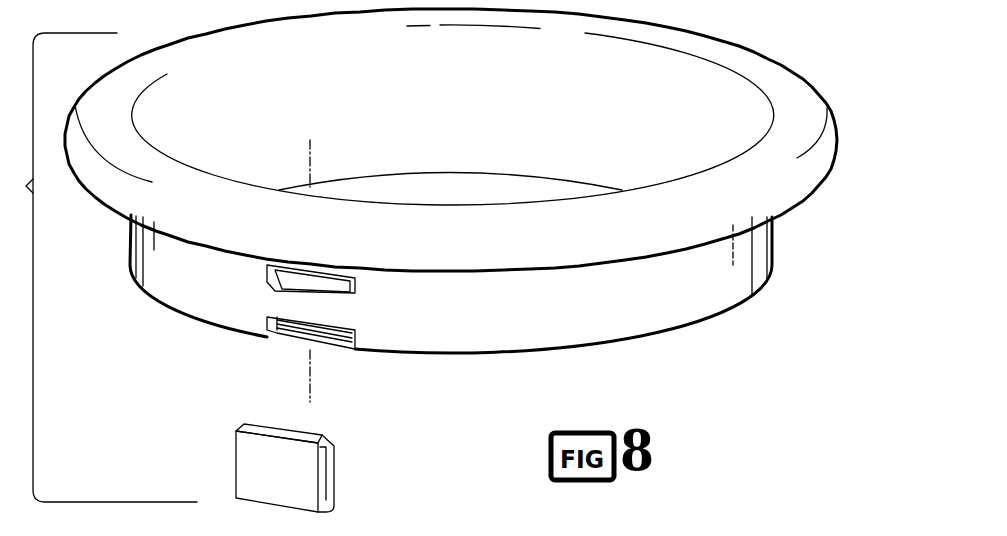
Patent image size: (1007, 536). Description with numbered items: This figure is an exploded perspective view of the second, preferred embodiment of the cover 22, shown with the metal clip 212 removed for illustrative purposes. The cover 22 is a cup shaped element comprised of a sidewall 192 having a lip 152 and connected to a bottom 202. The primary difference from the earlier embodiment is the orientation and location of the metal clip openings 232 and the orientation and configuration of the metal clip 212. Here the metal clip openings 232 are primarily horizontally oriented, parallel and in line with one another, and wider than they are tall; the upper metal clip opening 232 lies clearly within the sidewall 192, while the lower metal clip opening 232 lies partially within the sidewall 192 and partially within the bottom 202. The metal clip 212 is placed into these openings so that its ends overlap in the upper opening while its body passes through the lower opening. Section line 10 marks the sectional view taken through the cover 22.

The section line 10 is at (333, 163).
The cover 22 is at (793, 230).
The lip 152 is at (802, 95).
The sidewall 192 is at (683, 278).
The bottom 202 is at (555, 191).
The metal clip 212 is at (333, 477).
The metal clip openings 232 is at (333, 280).